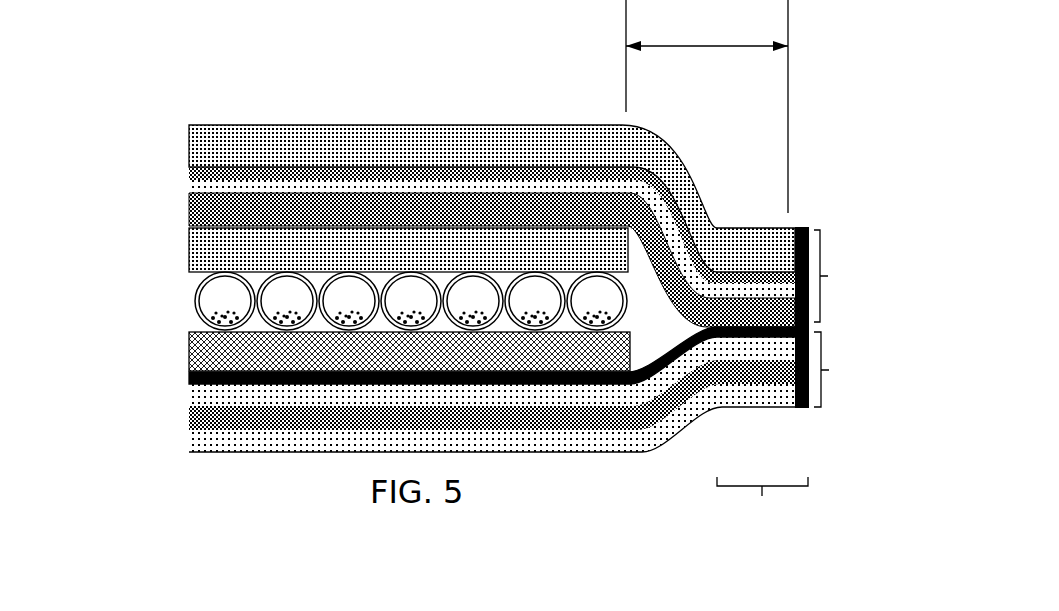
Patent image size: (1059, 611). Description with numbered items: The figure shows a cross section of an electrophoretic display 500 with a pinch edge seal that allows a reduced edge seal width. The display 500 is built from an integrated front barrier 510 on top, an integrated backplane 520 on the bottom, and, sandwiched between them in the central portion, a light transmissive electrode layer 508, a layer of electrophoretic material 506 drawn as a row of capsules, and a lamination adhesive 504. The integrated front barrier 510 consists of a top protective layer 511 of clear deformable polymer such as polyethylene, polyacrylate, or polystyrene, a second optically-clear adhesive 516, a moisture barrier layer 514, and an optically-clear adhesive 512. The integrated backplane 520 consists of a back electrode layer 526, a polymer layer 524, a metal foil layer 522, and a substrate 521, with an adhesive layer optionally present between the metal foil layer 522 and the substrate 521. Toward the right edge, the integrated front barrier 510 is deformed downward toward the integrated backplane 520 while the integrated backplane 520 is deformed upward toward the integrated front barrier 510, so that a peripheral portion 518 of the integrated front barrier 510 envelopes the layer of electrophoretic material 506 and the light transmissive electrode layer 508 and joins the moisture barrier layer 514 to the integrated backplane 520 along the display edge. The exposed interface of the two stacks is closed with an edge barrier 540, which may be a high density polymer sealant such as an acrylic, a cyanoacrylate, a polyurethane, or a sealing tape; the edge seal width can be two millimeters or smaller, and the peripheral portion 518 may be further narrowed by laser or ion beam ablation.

The display 500 is at (378, 80).
The top protective layer 511 is at (257, 152).
The second optically-clear adhesive 516 is at (220, 168).
The moisture barrier layer 514 is at (218, 185).
The optically-clear adhesive 512 is at (222, 206).
The light transmissive electrode layer 508 is at (203, 241).
The layer of electrophoretic material 506 is at (237, 291).
The lamination adhesive 504 is at (200, 356).
The back electrode layer 526 is at (197, 378).
The polymer layer 524 is at (198, 392).
The metal foil layer 522 is at (187, 421).
The substrate 521 is at (237, 448).
The edge barrier 540 is at (810, 410).
The integrated front barrier 510 is at (855, 276).
The integrated backplane 520 is at (857, 369).
The peripheral portion 518 is at (762, 520).